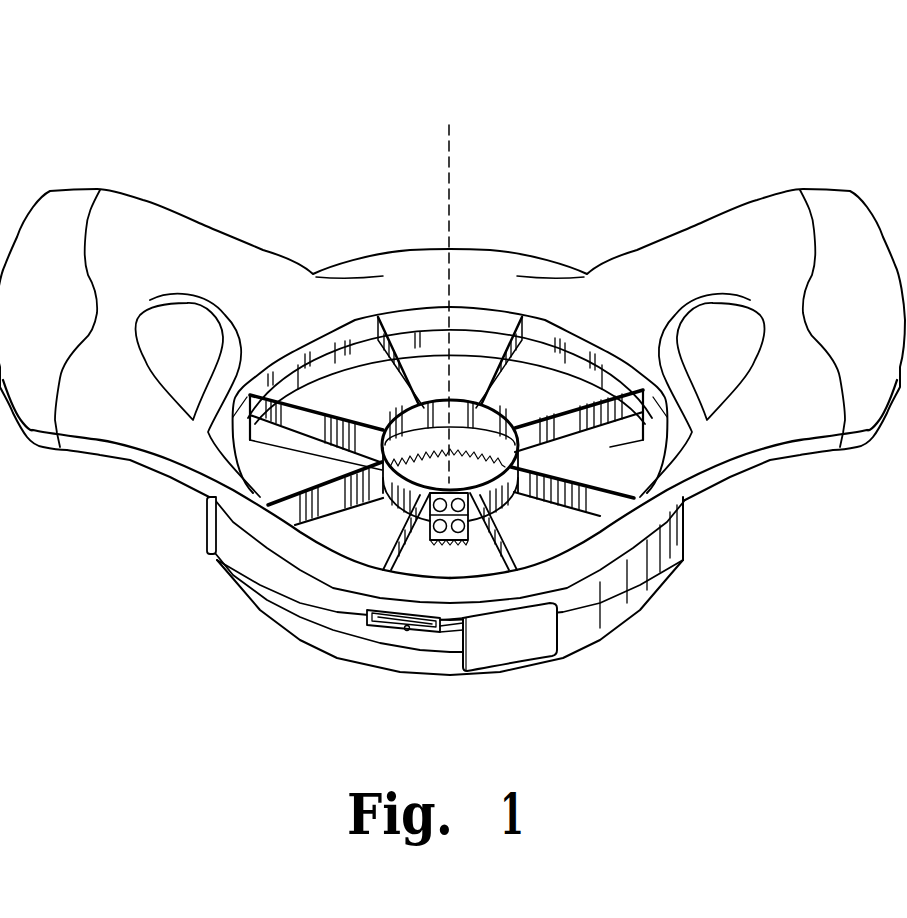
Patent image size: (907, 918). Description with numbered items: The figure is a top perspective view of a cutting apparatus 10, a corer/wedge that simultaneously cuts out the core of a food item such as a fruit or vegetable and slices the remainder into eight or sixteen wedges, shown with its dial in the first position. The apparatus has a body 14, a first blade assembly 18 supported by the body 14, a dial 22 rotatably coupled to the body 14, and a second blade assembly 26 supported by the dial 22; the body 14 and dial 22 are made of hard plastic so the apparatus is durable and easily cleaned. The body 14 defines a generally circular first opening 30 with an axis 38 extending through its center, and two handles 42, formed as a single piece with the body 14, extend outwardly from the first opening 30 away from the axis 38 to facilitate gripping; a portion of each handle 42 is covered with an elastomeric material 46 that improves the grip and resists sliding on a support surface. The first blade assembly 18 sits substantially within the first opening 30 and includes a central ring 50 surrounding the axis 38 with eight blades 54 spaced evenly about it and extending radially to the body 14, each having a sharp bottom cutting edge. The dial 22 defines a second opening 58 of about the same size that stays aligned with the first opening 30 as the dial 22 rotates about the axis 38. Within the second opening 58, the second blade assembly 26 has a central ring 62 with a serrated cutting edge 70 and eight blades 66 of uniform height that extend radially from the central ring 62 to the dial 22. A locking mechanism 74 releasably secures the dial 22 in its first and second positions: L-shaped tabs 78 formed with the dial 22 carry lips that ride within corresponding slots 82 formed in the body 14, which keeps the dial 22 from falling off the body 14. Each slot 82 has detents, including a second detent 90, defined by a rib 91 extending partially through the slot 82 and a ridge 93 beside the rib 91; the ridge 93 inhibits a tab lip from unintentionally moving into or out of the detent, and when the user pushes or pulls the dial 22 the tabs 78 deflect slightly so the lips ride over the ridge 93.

The cutting apparatus 10 is at (634, 116).
The body 14 is at (348, 265).
The first blade assembly 18 is at (307, 396).
The dial 22 is at (665, 567).
The second blade assembly 26 is at (538, 366).
The first opening 30 is at (357, 562).
The axis 38 is at (452, 174).
The handles 42 is at (137, 210).
The elastomeric material 46 is at (53, 197).
The central ring 50 is at (503, 420).
The blades 54 is at (343, 502).
The second opening 58 is at (480, 345).
The central ring 62 is at (462, 438).
The blades 66 is at (323, 440).
The serrated cutting edge 70 is at (391, 516).
The locking mechanism 74 is at (357, 631).
The tabs 78 is at (206, 522).
The slots 82 is at (407, 631).
The second detent 90 is at (363, 613).
The rib 91 is at (453, 621).
The ridge 93 is at (390, 628).